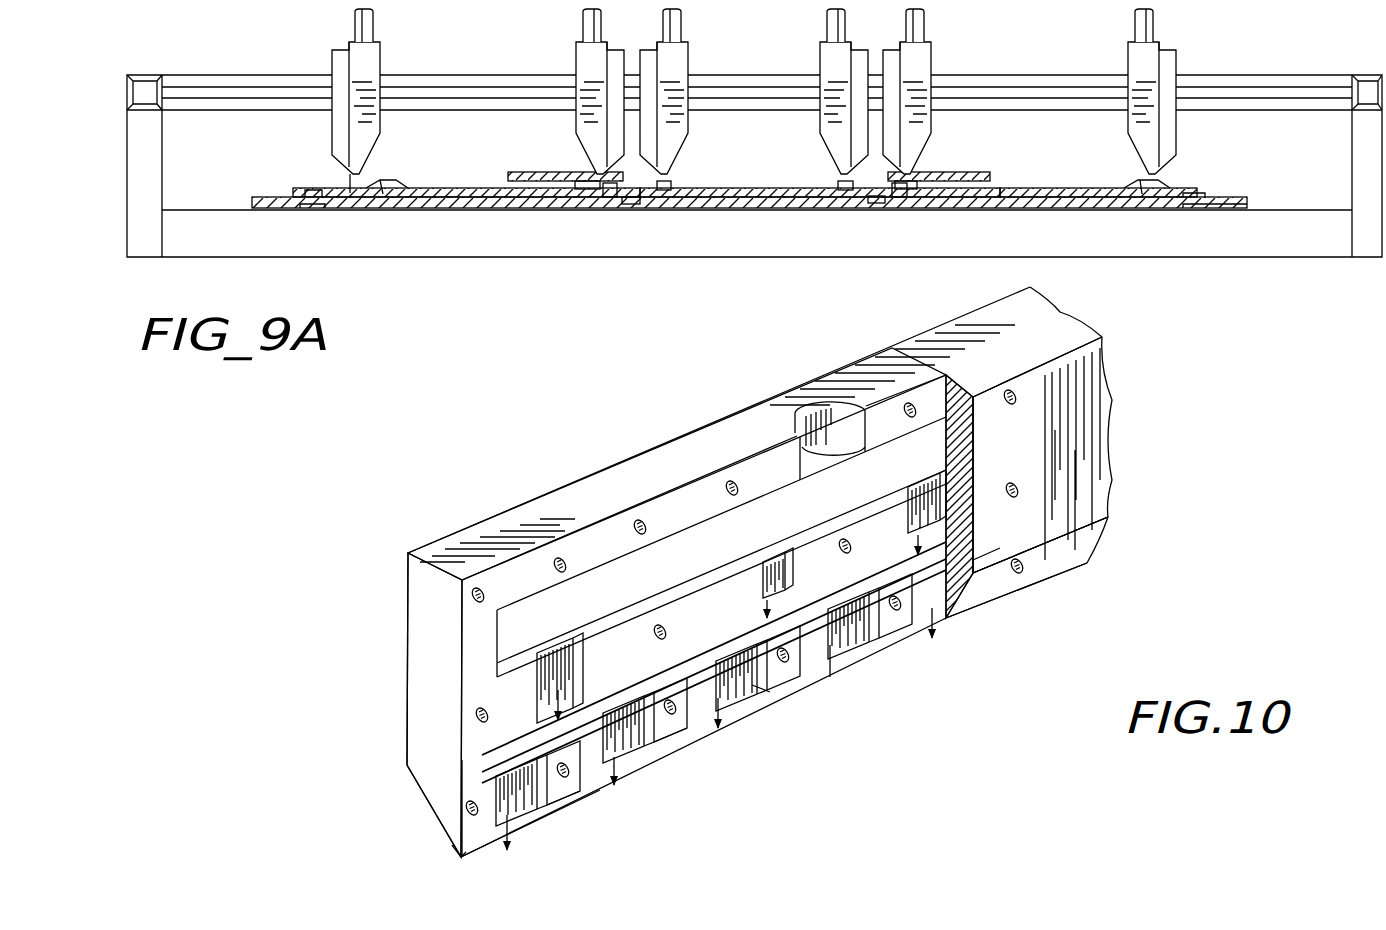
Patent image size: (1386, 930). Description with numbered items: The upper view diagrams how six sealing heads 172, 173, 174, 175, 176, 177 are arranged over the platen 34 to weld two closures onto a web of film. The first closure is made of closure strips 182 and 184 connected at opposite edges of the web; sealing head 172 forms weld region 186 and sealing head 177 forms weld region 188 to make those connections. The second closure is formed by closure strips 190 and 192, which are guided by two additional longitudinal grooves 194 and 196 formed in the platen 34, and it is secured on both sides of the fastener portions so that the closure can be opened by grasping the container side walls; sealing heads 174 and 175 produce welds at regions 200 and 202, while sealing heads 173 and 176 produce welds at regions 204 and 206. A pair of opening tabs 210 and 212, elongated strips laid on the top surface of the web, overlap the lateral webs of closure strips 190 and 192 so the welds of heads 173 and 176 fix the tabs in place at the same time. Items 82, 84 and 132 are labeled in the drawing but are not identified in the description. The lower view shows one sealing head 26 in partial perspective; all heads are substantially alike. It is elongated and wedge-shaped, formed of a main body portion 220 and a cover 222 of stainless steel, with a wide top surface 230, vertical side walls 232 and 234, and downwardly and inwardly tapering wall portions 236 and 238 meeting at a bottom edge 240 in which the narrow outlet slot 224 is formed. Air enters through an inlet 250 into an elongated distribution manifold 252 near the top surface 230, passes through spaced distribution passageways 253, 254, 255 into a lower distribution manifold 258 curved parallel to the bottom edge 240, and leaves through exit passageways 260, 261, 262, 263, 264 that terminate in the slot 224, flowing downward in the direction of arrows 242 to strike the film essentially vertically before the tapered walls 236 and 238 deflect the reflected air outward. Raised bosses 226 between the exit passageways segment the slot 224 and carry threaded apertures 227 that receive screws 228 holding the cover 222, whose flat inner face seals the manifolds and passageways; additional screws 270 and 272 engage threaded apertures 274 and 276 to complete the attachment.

In FIG. 9A, the platen 34 is at (1250, 197).
In FIG. 9A, the left end portion 82 is at (315, 204).
In FIG. 9A, the right end portion 84 is at (1197, 206).
In FIG. 9A, the sealing head 172 is at (380, 62).
In FIG. 9A, the sealing head 173 is at (578, 62).
In FIG. 9A, the sealing head 174 is at (688, 62).
In FIG. 9A, the sealing head 175 is at (820, 62).
In FIG. 9A, the sealing head 176 is at (931, 62).
In FIG. 9A, the sealing head 177 is at (1176, 62).
In FIG. 9A, the closure strip 182 is at (308, 192).
In FIG. 9A, the closure strip 184 is at (1197, 194).
In FIG. 9A, the weld region 186 is at (366, 185).
In FIG. 9A, the weld region 188 is at (1168, 185).
In FIG. 9A, the closure strip 190 is at (606, 200).
In FIG. 9A, the closure strip 192 is at (905, 200).
In FIG. 9A, the longitudinal groove 194 is at (632, 203).
In FIG. 9A, the longitudinal groove 196 is at (878, 203).
In FIG. 9A, the weld region 200 is at (662, 184).
In FIG. 9A, the weld region 202 is at (840, 186).
In FIG. 9A, the weld region 204 is at (575, 181).
In FIG. 9A, the weld region 206 is at (905, 181).
In FIG. 9A, the opening tab 210 is at (510, 173).
In FIG. 9A, the opening tab 212 is at (985, 180).
In FIG. 10, the sealing head 26 is at (535, 455).
In FIG. 10, the lower member 132 is at (990, 592).
In FIG. 10, the main body portion 220 is at (410, 603).
In FIG. 10, the cover 222 is at (1040, 386).
In FIG. 10, the outlet slot 224 is at (530, 840).
In FIG. 10, the raised bosses 226 is at (892, 630).
In FIG. 10, the threaded apertures 227 is at (458, 835).
In FIG. 10, the screws 228 is at (1021, 572).
In FIG. 10, the top surface 230 is at (430, 556).
In FIG. 10, the vertical side wall 232 is at (407, 648).
In FIG. 10, the vertical side wall 234 is at (976, 392).
In FIG. 10, the tapering wall portion 236 is at (422, 796).
In FIG. 10, the tapering wall portion 238 is at (1072, 572).
In FIG. 10, the bottom edge 240 is at (456, 856).
In FIG. 10, the arrows 242 is at (648, 748).
In FIG. 10, the inlet 250 is at (828, 470).
In FIG. 10, the distribution manifold 252 is at (708, 530).
In FIG. 10, the distribution passageway 253 is at (565, 648).
In FIG. 10, the distribution passageway 254 is at (767, 565).
In FIG. 10, the distribution passageway 255 is at (910, 495).
In FIG. 10, the lower distribution manifold 258 is at (492, 758).
In FIG. 10, the exit passageway 260 is at (528, 806).
In FIG. 10, the exit passageway 261 is at (628, 768).
In FIG. 10, the exit passageway 262 is at (736, 716).
In FIG. 10, the exit passageway 263 is at (860, 657).
In FIG. 10, the exit passageway 264 is at (977, 556).
In FIG. 10, the screw 270 is at (1021, 488).
In FIG. 10, the screw 272 is at (1012, 404).
In FIG. 10, the threaded aperture 274 is at (843, 547).
In FIG. 10, the threaded aperture 276 is at (566, 572).